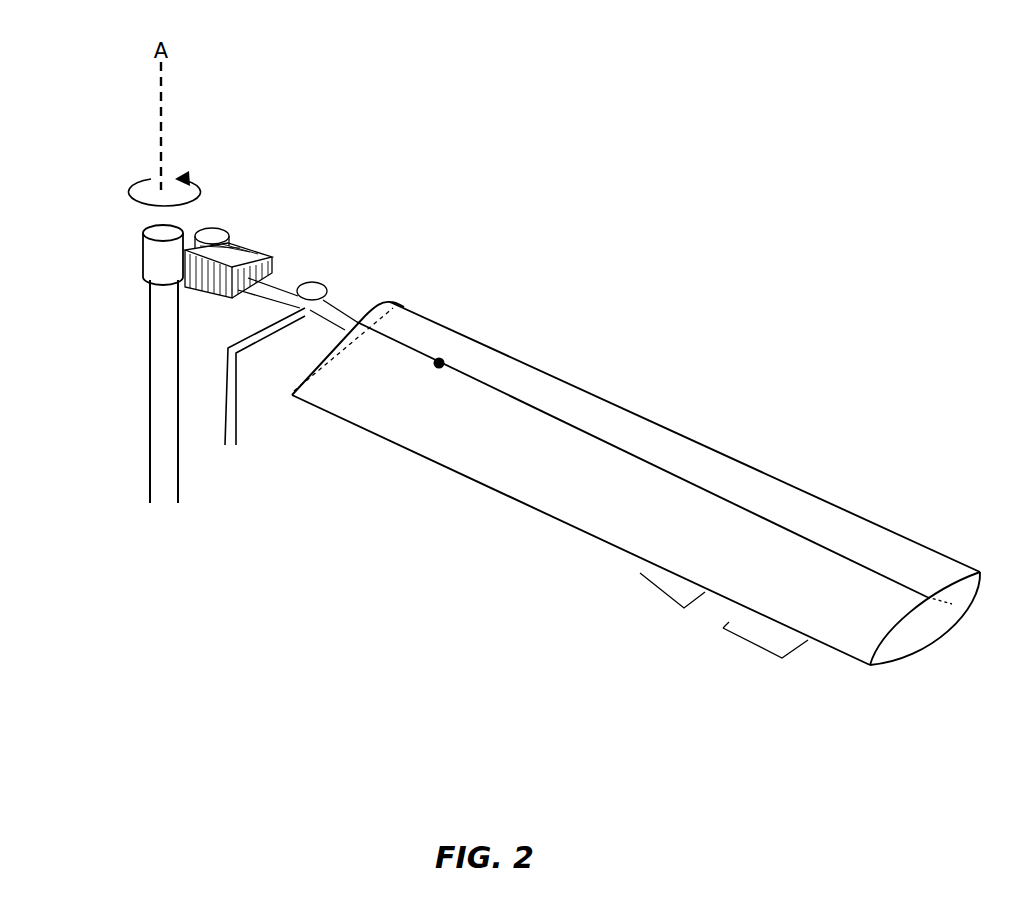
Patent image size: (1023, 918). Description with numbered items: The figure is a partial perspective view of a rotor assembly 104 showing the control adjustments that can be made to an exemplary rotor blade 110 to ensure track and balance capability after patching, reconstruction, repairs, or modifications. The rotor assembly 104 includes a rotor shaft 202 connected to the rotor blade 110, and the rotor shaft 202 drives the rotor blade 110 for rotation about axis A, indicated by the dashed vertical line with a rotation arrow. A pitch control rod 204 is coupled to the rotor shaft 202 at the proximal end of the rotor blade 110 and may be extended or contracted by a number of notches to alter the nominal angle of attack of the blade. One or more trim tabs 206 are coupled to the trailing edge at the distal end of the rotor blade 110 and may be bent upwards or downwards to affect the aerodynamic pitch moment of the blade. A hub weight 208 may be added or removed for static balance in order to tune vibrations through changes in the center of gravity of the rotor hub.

The rotor assembly 104 is at (312, 163).
The rotor blade 110 is at (622, 434).
The rotor shaft 202 is at (168, 397).
The pitch control rod 204 is at (230, 398).
The trim tab 206 is at (657, 577).
The hub weight 208 is at (455, 339).